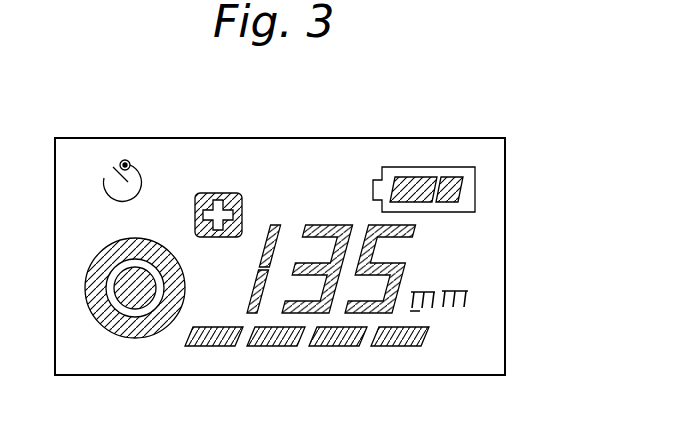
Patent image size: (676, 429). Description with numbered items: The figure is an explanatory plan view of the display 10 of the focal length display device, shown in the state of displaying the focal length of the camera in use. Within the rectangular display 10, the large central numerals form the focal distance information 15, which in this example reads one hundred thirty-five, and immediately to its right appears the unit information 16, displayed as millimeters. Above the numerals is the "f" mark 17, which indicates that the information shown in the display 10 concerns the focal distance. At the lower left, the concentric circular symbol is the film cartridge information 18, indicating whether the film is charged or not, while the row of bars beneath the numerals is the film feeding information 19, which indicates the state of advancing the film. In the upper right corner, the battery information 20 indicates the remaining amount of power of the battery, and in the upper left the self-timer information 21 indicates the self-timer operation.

The display 10 is at (489, 134).
The focal distance information 15 is at (424, 265).
The unit information 16 is at (475, 305).
The "f" mark 17 is at (213, 193).
The film cartridge information 18 is at (110, 333).
The film feeding information 19 is at (395, 346).
The battery information 20 is at (398, 167).
The self-timer information 21 is at (103, 165).